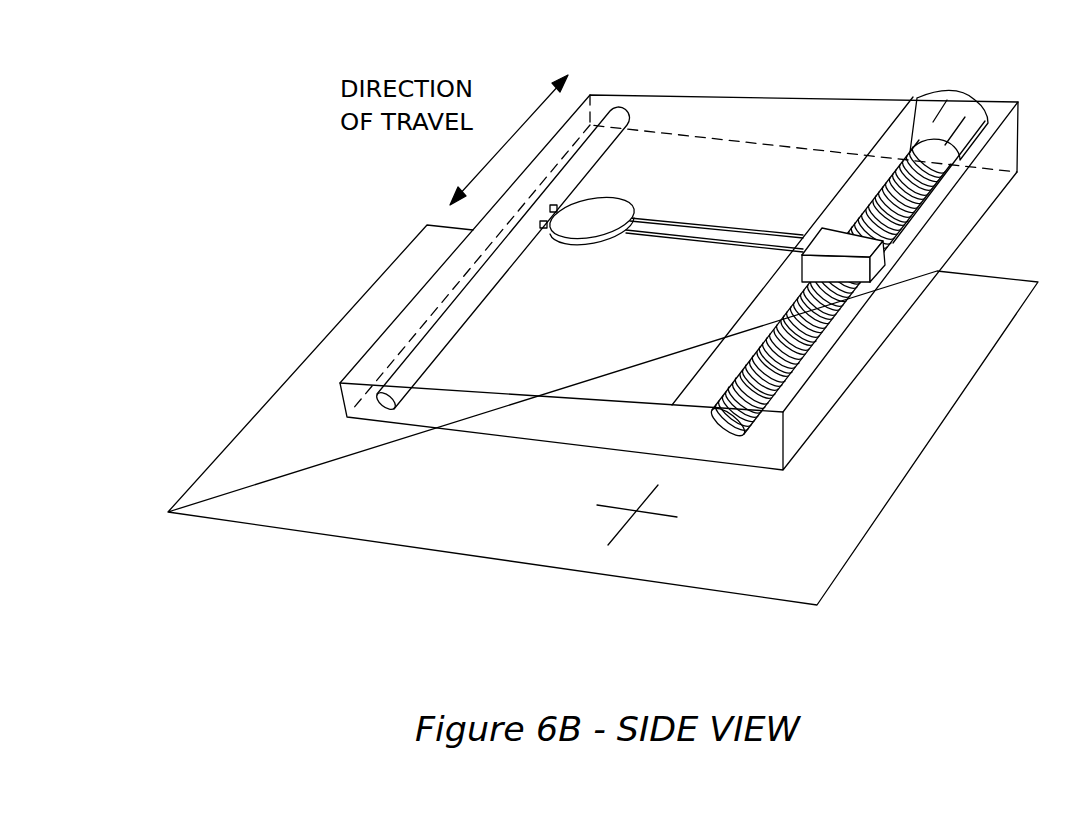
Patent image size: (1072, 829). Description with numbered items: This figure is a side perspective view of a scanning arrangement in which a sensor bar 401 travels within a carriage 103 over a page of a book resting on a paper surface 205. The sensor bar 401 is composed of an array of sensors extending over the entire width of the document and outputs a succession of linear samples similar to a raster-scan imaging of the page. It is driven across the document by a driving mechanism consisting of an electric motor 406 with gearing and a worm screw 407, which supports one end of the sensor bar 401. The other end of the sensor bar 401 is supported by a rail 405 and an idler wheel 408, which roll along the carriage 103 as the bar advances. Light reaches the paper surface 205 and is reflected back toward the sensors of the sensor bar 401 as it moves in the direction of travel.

The carriage 103 is at (830, 369).
The paper surface 205 is at (663, 583).
The sensor bar 401 is at (712, 219).
The rail 405 is at (497, 290).
The electric motor 406 is at (958, 94).
The worm screw 407 is at (935, 194).
The idler wheel 408 is at (592, 224).